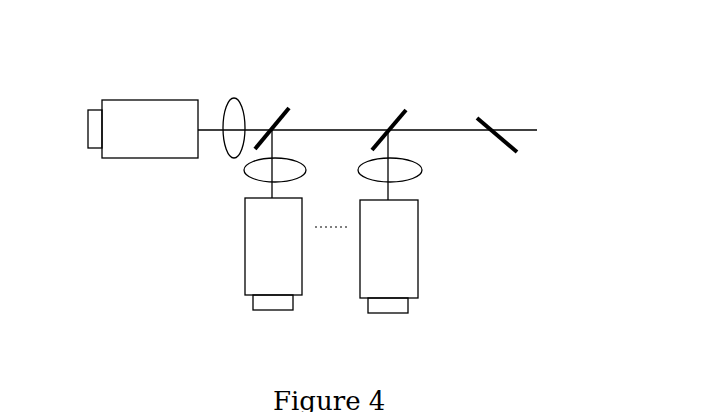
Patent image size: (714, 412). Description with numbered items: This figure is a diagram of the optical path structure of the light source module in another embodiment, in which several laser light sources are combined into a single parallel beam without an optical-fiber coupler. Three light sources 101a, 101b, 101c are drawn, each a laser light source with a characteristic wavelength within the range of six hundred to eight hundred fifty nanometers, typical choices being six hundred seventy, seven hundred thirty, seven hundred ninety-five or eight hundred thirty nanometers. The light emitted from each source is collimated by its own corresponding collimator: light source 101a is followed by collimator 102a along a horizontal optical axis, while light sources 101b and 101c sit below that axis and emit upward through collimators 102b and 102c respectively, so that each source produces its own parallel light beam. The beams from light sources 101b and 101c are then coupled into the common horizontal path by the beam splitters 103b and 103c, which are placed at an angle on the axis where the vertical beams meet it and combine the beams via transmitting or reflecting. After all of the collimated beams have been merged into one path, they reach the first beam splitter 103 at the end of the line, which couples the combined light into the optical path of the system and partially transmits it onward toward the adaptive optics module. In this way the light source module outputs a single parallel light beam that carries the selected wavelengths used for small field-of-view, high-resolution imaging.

The light source 101a is at (150, 100).
The light source 101b is at (243, 287).
The light source 101c is at (420, 277).
The collimator 102a is at (233, 97).
The collimator 102b is at (306, 172).
The collimator 102c is at (421, 176).
The first beam splitter 103 is at (505, 127).
The beam splitter 103b is at (288, 110).
The beam splitter 103c is at (405, 111).